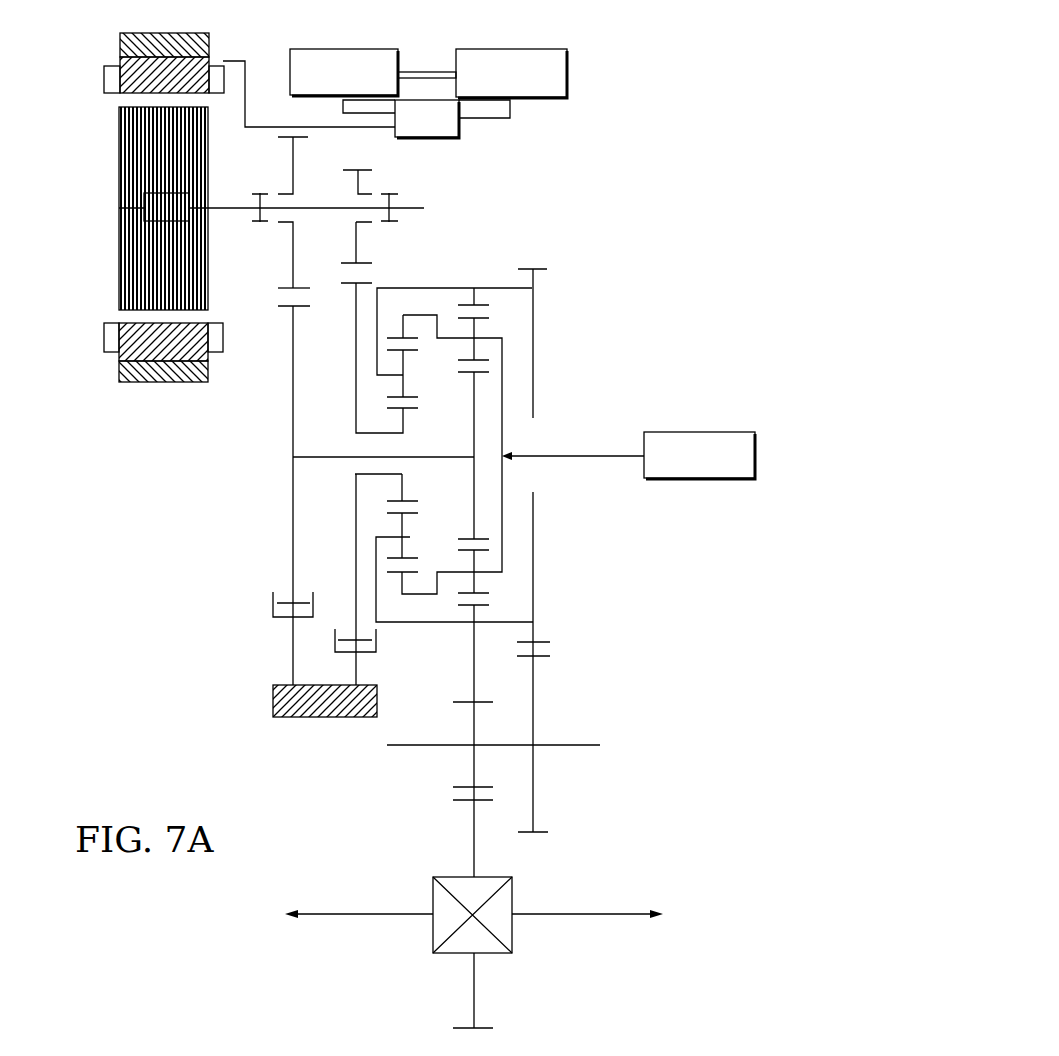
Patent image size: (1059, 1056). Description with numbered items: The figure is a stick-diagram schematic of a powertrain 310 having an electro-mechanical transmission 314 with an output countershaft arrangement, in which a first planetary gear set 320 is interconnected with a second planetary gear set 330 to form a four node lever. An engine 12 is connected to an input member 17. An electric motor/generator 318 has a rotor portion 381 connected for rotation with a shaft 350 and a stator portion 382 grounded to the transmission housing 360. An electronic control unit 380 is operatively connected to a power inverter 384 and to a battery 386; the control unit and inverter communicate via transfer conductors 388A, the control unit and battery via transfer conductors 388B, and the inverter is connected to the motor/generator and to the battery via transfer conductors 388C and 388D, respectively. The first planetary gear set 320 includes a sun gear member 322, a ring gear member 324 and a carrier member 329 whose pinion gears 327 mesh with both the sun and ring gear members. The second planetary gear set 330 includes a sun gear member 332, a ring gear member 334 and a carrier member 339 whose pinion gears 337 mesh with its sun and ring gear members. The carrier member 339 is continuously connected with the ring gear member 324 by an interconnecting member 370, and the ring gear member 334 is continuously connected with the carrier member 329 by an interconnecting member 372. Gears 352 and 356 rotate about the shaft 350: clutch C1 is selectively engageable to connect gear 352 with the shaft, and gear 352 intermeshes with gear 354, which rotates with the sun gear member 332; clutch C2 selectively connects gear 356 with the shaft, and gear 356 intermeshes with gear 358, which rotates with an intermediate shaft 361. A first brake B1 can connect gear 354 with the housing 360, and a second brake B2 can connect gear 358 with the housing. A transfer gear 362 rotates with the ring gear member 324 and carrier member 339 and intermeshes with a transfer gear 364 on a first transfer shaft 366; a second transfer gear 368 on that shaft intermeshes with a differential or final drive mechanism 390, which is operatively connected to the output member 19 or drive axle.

The engine 12 is at (702, 432).
The input member 17 is at (577, 456).
The output member 19 is at (373, 914).
The powertrain 310 is at (602, 42).
The electro-mechanical transmission 314 is at (495, 186).
The electric motor/generator 318 is at (85, 220).
The first planetary gear set 320 is at (462, 623).
The sun gear member 322 is at (480, 373).
The ring gear member 324 is at (483, 288).
The pinion gears 327 is at (473, 350).
The carrier member 329 is at (490, 332).
The second planetary gear set 330 is at (394, 588).
The sun gear member 332 is at (408, 412).
The ring gear member 334 is at (393, 338).
The pinion gears 337 is at (405, 390).
The carrier member 339 is at (403, 380).
The shaft 350 is at (229, 210).
The gear 352 is at (353, 263).
The gear 354 is at (355, 306).
The gear 356 is at (285, 288).
The gear 358 is at (293, 368).
The transmission housing 360 is at (170, 33).
The intermediate shaft 361 is at (355, 457).
The transfer gear 362 is at (537, 628).
The transfer gear 364 is at (533, 718).
The first transfer shaft 366 is at (565, 747).
The second transfer gear 368 is at (470, 767).
The interconnecting member 370 is at (438, 288).
The interconnecting member 372 is at (420, 315).
The electronic control unit 380 is at (345, 49).
The rotor portion 381 is at (118, 170).
The stator portion 382 is at (117, 62).
The power inverter 384 is at (427, 138).
The battery 386 is at (510, 49).
The transfer conductors 388A is at (343, 105).
The transfer conductors 388B is at (428, 72).
The transfer conductors 388C is at (377, 128).
The transfer conductors 388D is at (490, 118).
The differential or final drive mechanism 390 is at (472, 827).
The first brake B1 is at (367, 664).
The second brake B2 is at (263, 605).
The first torque-transmitting mechanism C1 is at (389, 186).
The second torque-transmitting mechanism C2 is at (260, 186).